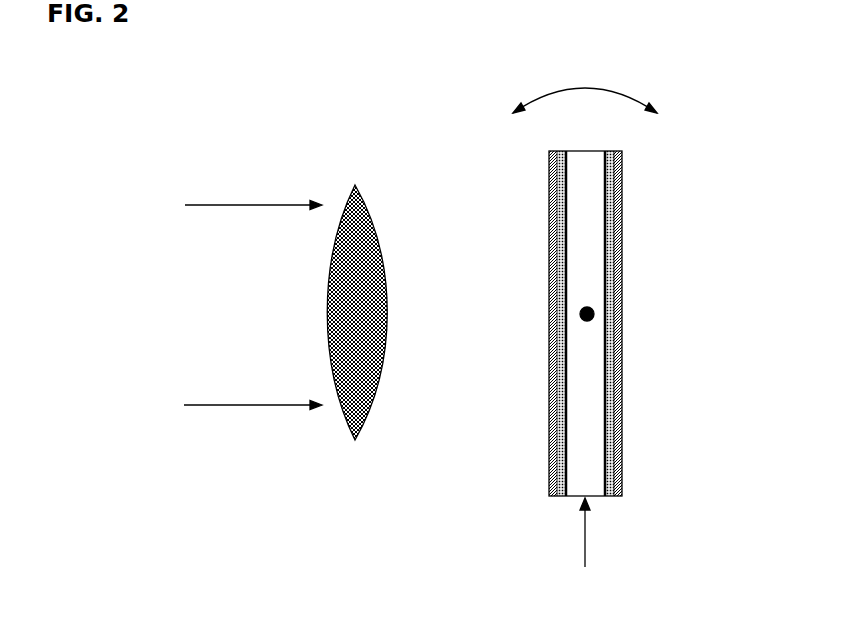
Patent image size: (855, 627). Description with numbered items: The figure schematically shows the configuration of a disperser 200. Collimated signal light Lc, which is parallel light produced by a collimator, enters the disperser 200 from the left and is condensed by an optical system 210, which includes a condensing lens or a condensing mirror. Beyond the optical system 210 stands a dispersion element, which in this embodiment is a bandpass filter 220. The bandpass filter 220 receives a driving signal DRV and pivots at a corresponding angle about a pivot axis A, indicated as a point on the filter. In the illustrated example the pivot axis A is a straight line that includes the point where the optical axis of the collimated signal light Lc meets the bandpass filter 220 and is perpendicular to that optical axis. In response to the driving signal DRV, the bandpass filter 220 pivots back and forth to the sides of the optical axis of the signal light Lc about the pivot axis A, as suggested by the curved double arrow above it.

The disperser 200 is at (148, 172).
The optical system 210 is at (355, 440).
The bandpass filter 220 is at (588, 375).
The pivot axis A is at (594, 318).
The collimated signal light Lc is at (253, 287).
The driving signal DRV is at (587, 547).